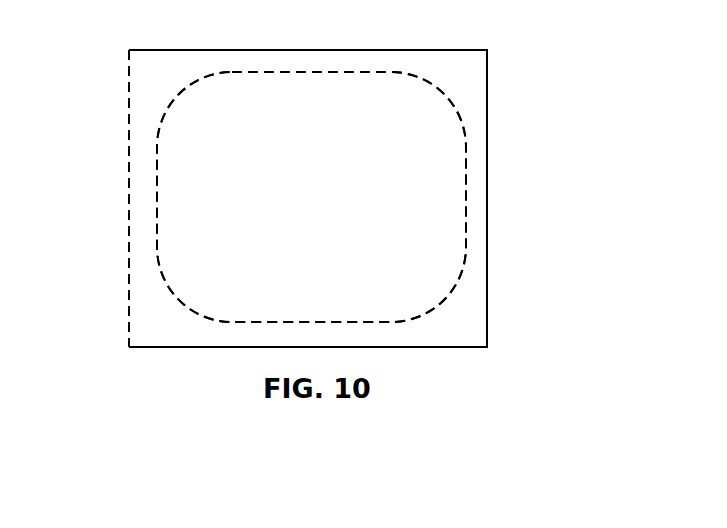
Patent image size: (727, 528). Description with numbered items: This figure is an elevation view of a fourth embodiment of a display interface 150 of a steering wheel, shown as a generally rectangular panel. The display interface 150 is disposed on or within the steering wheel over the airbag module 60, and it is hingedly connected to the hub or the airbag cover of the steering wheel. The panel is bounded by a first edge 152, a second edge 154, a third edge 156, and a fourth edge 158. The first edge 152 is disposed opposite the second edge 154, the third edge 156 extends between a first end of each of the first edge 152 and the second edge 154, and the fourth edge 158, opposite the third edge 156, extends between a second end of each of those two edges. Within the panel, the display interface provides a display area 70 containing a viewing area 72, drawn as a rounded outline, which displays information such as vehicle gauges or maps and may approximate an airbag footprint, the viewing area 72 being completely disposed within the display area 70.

The airbag module 60 is at (466, 146).
The display area 70 is at (136, 70).
The viewing area 72 is at (173, 128).
The display interface 150 is at (507, 200).
The first edge 152 is at (122, 240).
The second edge 154 is at (487, 272).
The third edge 156 is at (420, 50).
The fourth edge 158 is at (424, 348).